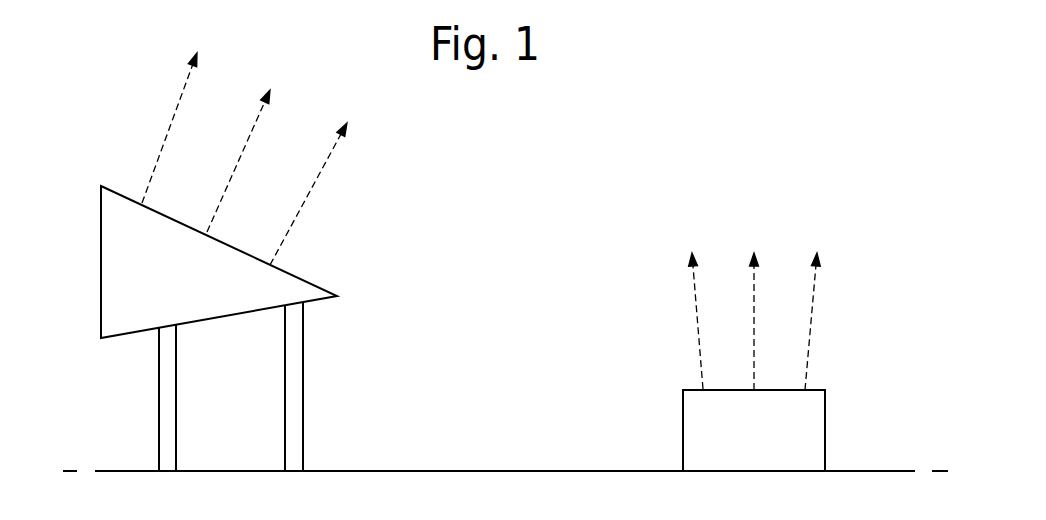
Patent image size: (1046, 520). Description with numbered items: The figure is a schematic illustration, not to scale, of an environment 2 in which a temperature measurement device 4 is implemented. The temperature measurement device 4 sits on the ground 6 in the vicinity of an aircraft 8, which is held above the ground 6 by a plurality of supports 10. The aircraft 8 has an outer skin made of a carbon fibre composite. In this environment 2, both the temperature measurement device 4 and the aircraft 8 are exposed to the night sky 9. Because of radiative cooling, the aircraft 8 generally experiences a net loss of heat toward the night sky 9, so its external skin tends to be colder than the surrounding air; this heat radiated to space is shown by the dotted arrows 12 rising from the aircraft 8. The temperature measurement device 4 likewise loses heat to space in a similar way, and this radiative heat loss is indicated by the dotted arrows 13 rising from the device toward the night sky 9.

The environment 2 is at (723, 158).
The temperature measurement device 4 is at (807, 425).
The ground 6 is at (510, 470).
The aircraft 8 is at (118, 253).
The night sky 9 is at (530, 192).
The supports 10 is at (167, 397).
The heat radiated by the external skin of the aircraft 12 is at (175, 118).
The radiative heat loss from the temperature measurement device 13 is at (697, 312).